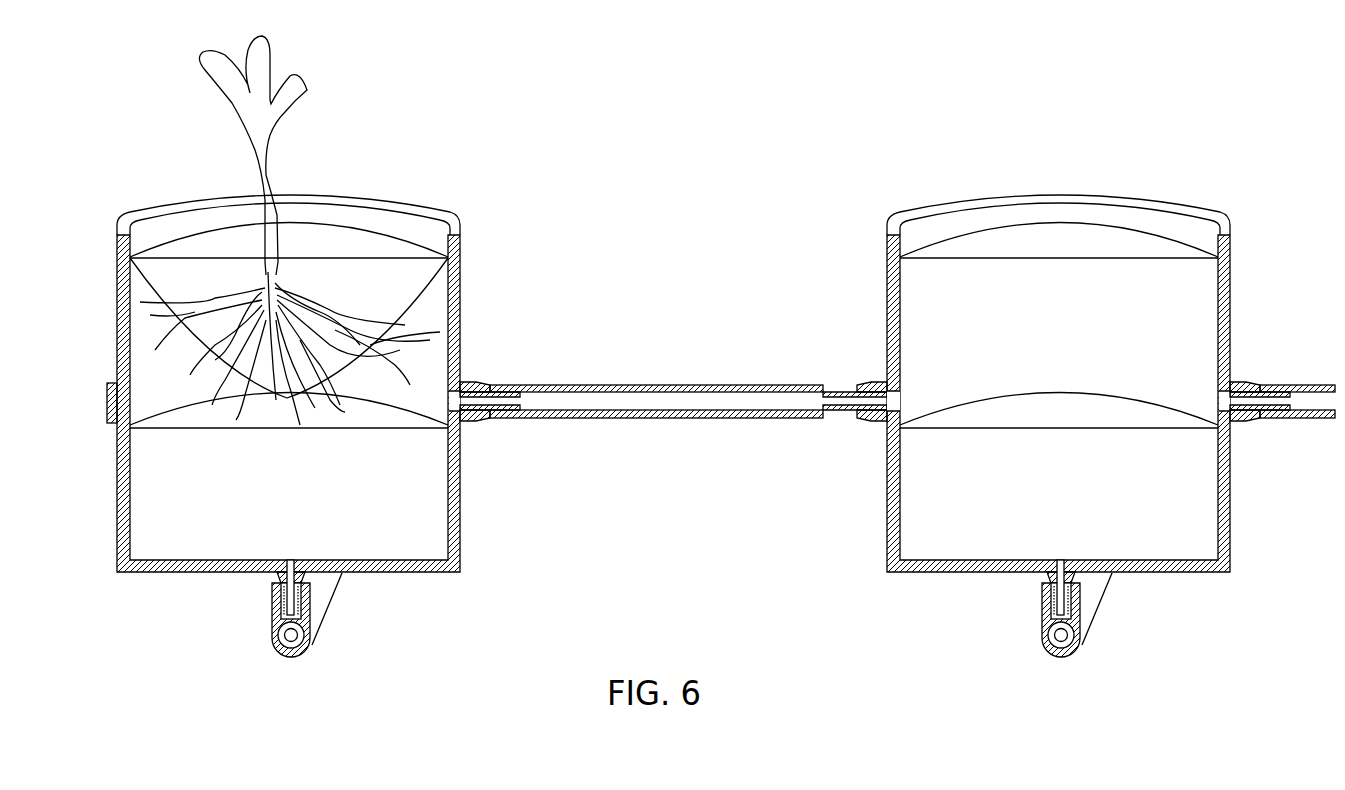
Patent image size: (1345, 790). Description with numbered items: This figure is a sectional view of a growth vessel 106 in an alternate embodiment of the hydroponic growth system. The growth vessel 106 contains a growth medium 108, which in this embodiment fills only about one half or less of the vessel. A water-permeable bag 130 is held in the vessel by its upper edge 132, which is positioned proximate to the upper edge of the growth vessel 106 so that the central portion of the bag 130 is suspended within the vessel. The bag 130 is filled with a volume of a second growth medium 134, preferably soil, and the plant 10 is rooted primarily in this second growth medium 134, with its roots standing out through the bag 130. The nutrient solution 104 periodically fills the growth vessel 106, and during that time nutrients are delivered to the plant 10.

The plant 10 is at (255, 133).
The nutrient solution 104 is at (428, 350).
The growth vessel 106 is at (462, 307).
The growth medium 108 is at (427, 508).
The water-permeable bag 130 is at (432, 293).
The upper edge 132 is at (410, 232).
The second growth medium 134 is at (313, 283).